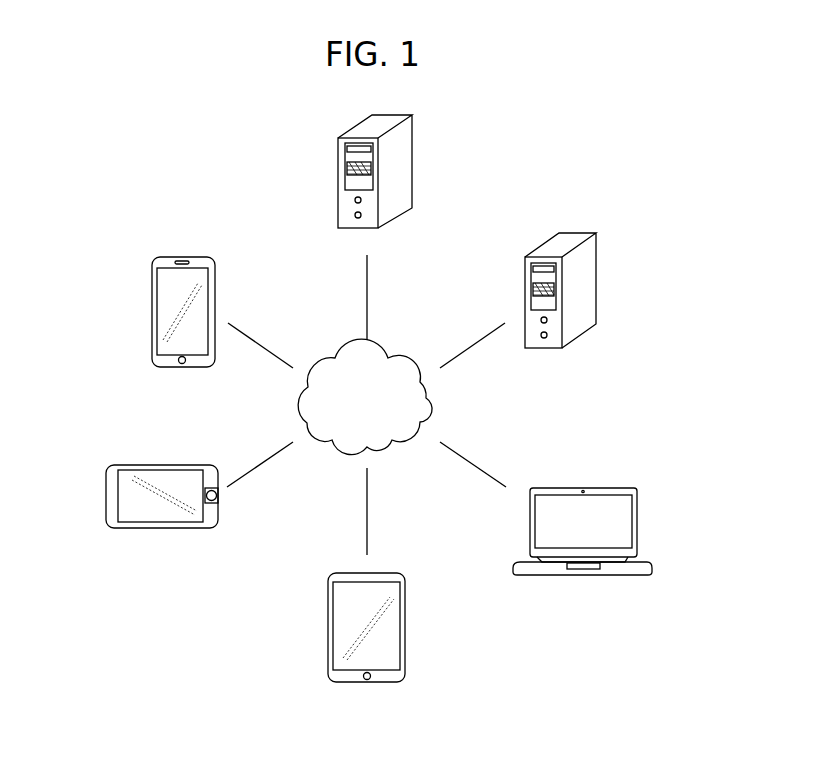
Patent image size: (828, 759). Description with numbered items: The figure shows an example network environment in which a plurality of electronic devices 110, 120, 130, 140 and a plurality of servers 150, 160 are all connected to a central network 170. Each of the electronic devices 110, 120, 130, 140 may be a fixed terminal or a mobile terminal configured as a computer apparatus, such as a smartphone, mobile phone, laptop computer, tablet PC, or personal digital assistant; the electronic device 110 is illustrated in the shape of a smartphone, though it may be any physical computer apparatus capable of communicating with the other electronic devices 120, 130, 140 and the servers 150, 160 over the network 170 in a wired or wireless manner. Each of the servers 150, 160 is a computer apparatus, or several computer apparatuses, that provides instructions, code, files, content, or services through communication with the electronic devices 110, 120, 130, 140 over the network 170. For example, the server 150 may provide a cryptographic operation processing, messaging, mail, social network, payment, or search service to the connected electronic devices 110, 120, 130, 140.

The electronic device 110 is at (152, 313).
The electronic device 120 is at (106, 498).
The electronic device 130 is at (405, 627).
The electronic device 140 is at (637, 523).
The server 150 is at (596, 282).
The server 160 is at (412, 162).
The network 170 is at (390, 360).